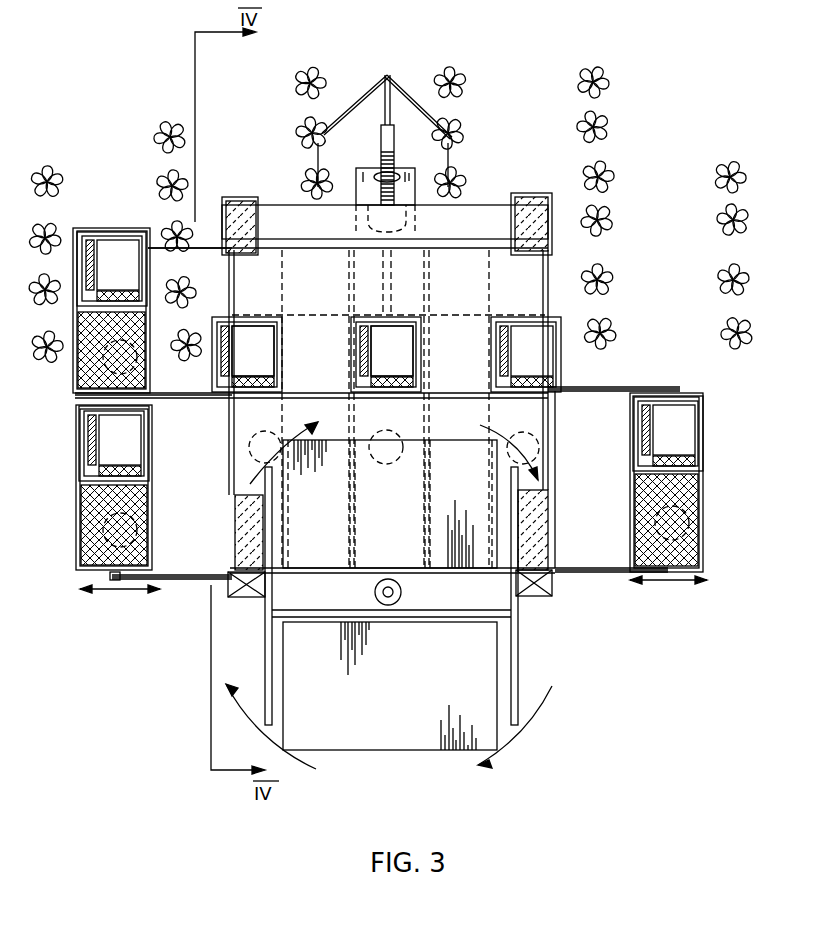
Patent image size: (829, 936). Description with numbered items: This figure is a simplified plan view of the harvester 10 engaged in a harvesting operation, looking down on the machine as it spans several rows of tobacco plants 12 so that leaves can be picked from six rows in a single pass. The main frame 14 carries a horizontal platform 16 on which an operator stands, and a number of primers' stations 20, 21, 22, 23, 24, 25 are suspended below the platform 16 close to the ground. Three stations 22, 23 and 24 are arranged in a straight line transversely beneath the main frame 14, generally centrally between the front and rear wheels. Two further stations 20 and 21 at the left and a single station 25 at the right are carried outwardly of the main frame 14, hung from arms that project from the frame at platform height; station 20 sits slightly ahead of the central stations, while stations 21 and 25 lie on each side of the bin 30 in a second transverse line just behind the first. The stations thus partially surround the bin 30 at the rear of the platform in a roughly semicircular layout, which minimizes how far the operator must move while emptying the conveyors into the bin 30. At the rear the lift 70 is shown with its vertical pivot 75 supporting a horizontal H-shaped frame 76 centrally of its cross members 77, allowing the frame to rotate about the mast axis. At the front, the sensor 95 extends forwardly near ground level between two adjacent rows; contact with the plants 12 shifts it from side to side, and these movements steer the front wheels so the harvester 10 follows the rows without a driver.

The harvester 10 is at (588, 600).
The tobacco plants 12 is at (165, 178).
The main frame 14 is at (483, 205).
The horizontal platform 16 is at (545, 423).
The primer's station 20 is at (148, 345).
The primer's station 21 is at (135, 510).
The primer's station 22 is at (268, 368).
The primer's station 23 is at (410, 405).
The primer's station 24 is at (548, 398).
The primer's station 25 is at (700, 488).
The bin 30 is at (446, 440).
The lift 70 is at (522, 598).
The vertical pivot 75 is at (401, 593).
The H-shaped frame 76 is at (265, 632).
The cross members 77 is at (340, 612).
The sensor 95 is at (405, 90).